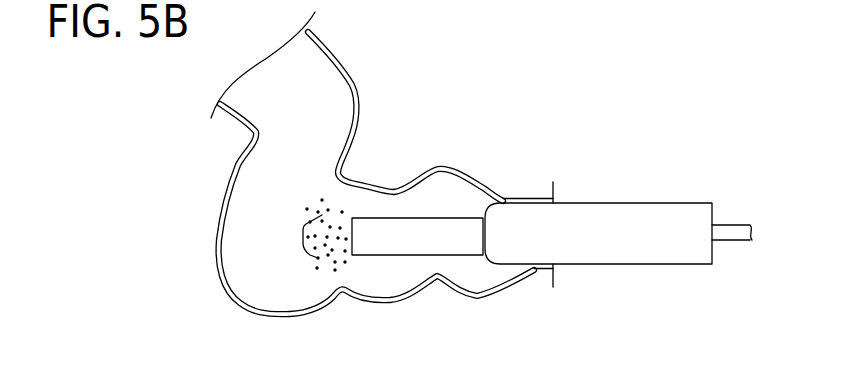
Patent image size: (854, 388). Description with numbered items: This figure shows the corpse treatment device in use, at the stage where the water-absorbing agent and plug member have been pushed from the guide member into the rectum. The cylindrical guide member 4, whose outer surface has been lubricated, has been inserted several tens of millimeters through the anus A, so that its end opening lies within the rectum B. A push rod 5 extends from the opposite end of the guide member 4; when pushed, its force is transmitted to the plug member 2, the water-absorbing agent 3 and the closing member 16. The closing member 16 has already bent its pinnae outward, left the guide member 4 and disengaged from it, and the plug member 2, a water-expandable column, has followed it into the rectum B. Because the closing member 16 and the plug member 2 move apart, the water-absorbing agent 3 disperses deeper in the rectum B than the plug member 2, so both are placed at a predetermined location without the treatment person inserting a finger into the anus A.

The plug member 2 is at (408, 243).
The water-absorbing agent 3 is at (332, 250).
The guide member 4 is at (630, 202).
The push rod 5 is at (732, 240).
The closing member 16 is at (303, 240).
The anus A is at (528, 198).
The rectum B is at (438, 167).